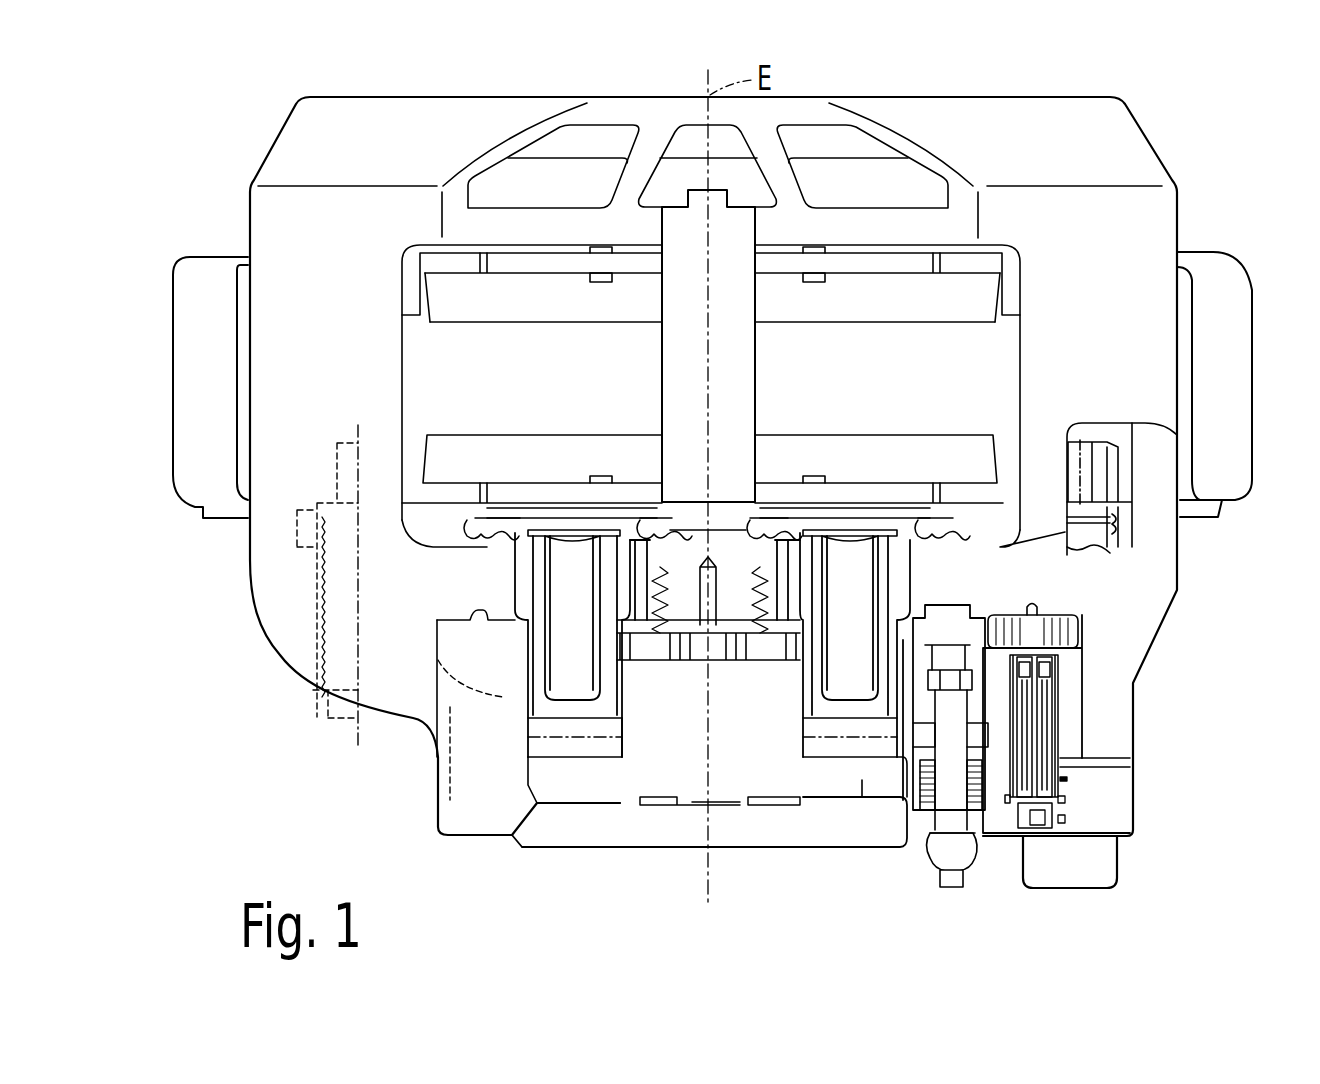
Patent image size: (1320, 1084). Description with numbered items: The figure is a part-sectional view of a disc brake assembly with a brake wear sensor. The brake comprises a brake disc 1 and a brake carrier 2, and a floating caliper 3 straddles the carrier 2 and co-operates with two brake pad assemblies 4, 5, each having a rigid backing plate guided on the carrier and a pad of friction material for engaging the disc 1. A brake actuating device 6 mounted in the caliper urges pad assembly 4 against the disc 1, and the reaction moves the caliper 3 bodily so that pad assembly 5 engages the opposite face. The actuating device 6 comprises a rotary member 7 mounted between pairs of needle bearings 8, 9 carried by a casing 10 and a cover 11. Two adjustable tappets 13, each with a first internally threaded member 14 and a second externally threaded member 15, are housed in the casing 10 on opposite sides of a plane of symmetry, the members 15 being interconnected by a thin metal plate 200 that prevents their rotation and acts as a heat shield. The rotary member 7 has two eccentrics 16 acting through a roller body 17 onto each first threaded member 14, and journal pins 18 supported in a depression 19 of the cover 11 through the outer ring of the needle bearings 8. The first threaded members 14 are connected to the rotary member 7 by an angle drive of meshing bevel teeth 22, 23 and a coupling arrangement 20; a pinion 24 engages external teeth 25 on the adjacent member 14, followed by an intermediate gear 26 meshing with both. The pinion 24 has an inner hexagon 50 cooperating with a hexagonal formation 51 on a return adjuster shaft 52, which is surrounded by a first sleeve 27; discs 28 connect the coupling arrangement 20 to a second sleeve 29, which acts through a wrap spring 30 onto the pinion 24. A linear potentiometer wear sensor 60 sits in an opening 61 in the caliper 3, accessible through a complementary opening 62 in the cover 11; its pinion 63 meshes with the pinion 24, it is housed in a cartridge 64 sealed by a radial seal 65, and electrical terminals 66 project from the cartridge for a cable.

The brake disc 1 is at (868, 368).
The brake carrier 2 is at (1227, 307).
The floating caliper 3 is at (1162, 208).
The brake pad assembly 4 is at (930, 457).
The brake pad assembly 5 is at (950, 293).
The brake actuating device 6 is at (647, 773).
The rotary member 7 is at (768, 762).
The needle bearings 8 is at (758, 807).
The needle bearings 9 is at (768, 665).
The casing 10 is at (430, 600).
The cover 11 is at (527, 845).
The adjustable tappets 13 is at (845, 517).
The first internally threaded member 14 is at (885, 557).
The second externally threaded member 15 is at (835, 573).
The eccentrics 16 is at (862, 780).
The roller body 17 is at (877, 748).
The journal pins 18 is at (667, 720).
The depression 19 is at (660, 807).
The coupling arrangement 20 is at (830, 757).
The bevel teeth 22 is at (943, 822).
The bevel teeth 23 is at (907, 843).
The pinion 24 is at (985, 622).
The external teeth 25 is at (903, 633).
The intermediate gear 26 is at (770, 635).
The first sleeve 27 is at (983, 773).
The discs 28 is at (988, 743).
The second sleeve 29 is at (980, 690).
The wrap spring 30 is at (983, 713).
The inner hexagon 50 is at (972, 660).
The hexagonal formation 51 is at (947, 678).
The return adjuster shaft 52 is at (953, 843).
The linear potentiometer wear sensor 60 is at (1063, 778).
The opening 61 is at (1073, 663).
The complementary opening 62 is at (1065, 817).
The pinion 63 is at (1073, 663).
The cartridge 64 is at (1060, 763).
The radial seal 65 is at (1065, 798).
The electrical terminals 66 is at (1047, 820).
The thin metal plate 200 is at (683, 530).